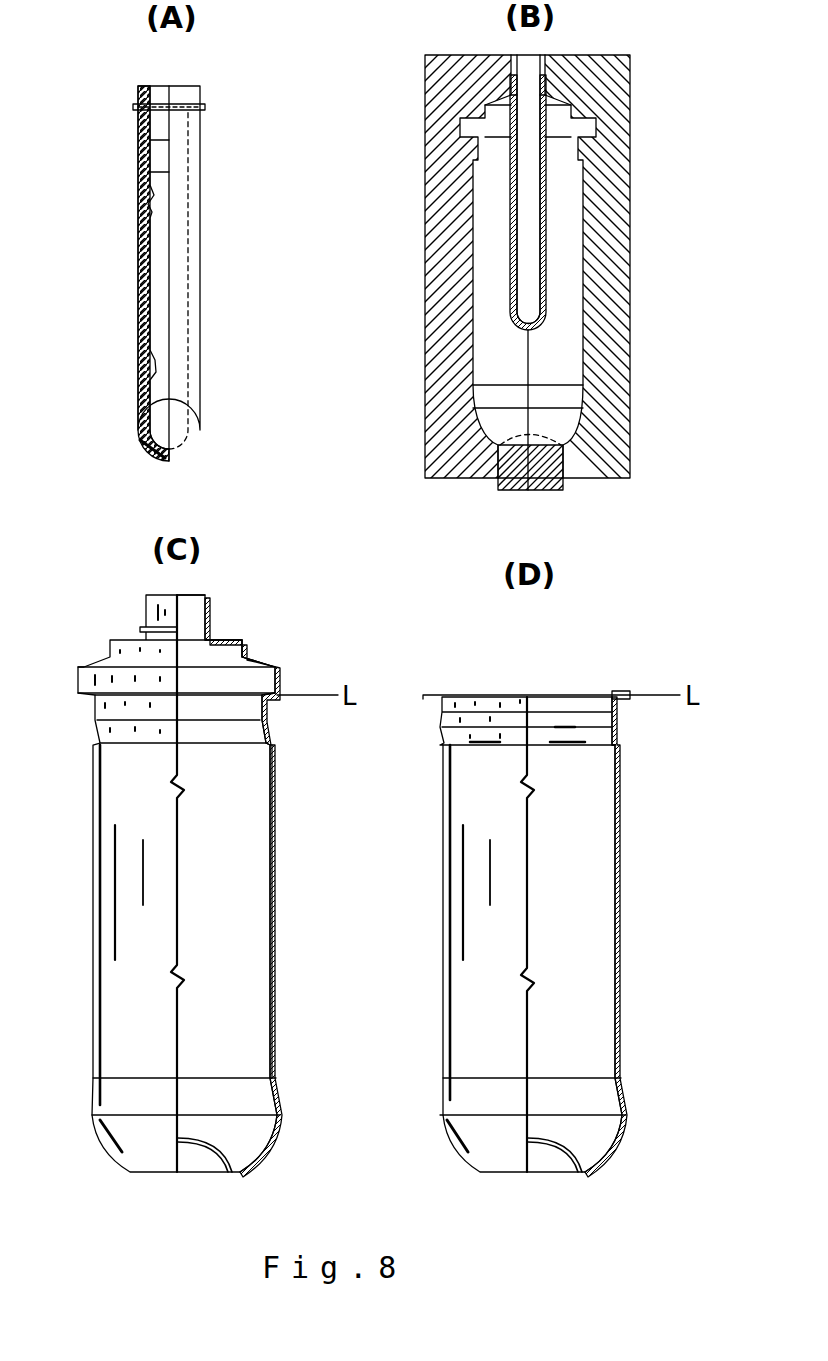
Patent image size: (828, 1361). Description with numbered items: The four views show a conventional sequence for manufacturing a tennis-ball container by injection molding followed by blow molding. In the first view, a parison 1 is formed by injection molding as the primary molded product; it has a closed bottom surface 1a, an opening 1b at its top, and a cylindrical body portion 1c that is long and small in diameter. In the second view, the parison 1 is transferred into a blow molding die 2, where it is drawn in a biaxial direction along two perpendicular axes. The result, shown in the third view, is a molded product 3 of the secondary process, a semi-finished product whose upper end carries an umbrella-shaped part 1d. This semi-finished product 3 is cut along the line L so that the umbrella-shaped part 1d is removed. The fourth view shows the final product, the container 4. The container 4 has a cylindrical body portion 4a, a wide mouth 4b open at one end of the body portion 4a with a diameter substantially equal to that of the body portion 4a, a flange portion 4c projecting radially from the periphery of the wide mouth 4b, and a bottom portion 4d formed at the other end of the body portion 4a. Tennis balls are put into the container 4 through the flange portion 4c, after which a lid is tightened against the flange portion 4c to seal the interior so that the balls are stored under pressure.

In FIG. 8B, the parison 1 is at (510, 190).
In FIG. 8C, the parison 1 is at (273, 920).
In FIG. 8A, the closed bottom surface 1a is at (170, 461).
In FIG. 8A, the opening 1b is at (182, 86).
In FIG. 8A, the cylindrical body portion 1c is at (209, 273).
In FIG. 8C, the umbrella-shaped part 1d is at (262, 658).
In FIG. 8B, the blow molding die 2 is at (622, 205).
In FIG. 8C, the molded product of a secondary process 3 is at (294, 842).
In FIG. 8D, the container 4 is at (506, 901).
In FIG. 8D, the cylindrical body portion 4a is at (443, 812).
In FIG. 8D, the wide mouth 4b is at (553, 693).
In FIG. 8D, the flange portion 4c is at (442, 695).
In FIG. 8D, the bottom portion 4d is at (442, 1115).